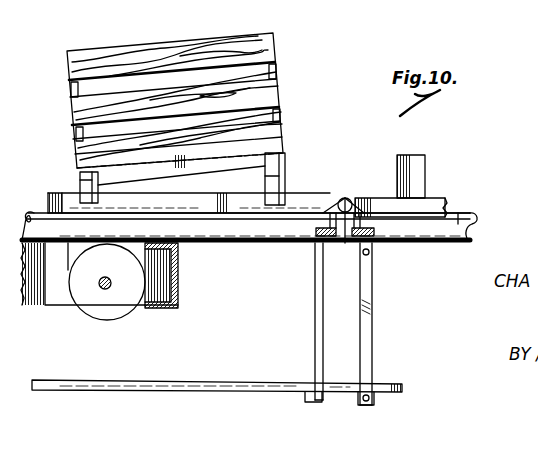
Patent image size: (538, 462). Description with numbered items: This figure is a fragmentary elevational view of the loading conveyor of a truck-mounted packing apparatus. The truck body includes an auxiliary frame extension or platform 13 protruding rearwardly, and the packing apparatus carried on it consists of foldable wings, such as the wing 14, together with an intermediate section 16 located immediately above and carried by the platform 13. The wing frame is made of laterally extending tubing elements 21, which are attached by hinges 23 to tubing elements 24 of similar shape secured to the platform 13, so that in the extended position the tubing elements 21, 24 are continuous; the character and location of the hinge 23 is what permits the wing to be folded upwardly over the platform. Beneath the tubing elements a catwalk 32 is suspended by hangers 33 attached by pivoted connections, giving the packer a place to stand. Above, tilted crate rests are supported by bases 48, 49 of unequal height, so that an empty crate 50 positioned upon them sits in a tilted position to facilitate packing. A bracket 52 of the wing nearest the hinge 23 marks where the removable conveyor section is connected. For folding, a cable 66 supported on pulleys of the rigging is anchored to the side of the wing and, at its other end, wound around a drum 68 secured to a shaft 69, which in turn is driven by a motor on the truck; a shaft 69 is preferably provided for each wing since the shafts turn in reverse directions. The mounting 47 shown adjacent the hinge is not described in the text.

The empty crate 50 is at (145, 48).
The crate rest base 49 is at (80, 182).
The crate rest base 48 is at (289, 165).
The tubing element 24 is at (266, 238).
The tubing element 21 is at (408, 241).
The wing 14 is at (476, 218).
The bracket 52 is at (425, 172).
The hinge 23 is at (350, 200).
The pivot mount bracket 47 is at (322, 202).
The hanger 33 is at (360, 305).
The catwalk 32 is at (239, 383).
The cable 66 is at (68, 264).
The drum 68 is at (93, 318).
The shaft 69 is at (110, 287).
The platform 13 is at (180, 291).
The intermediate section 16 is at (167, 311).